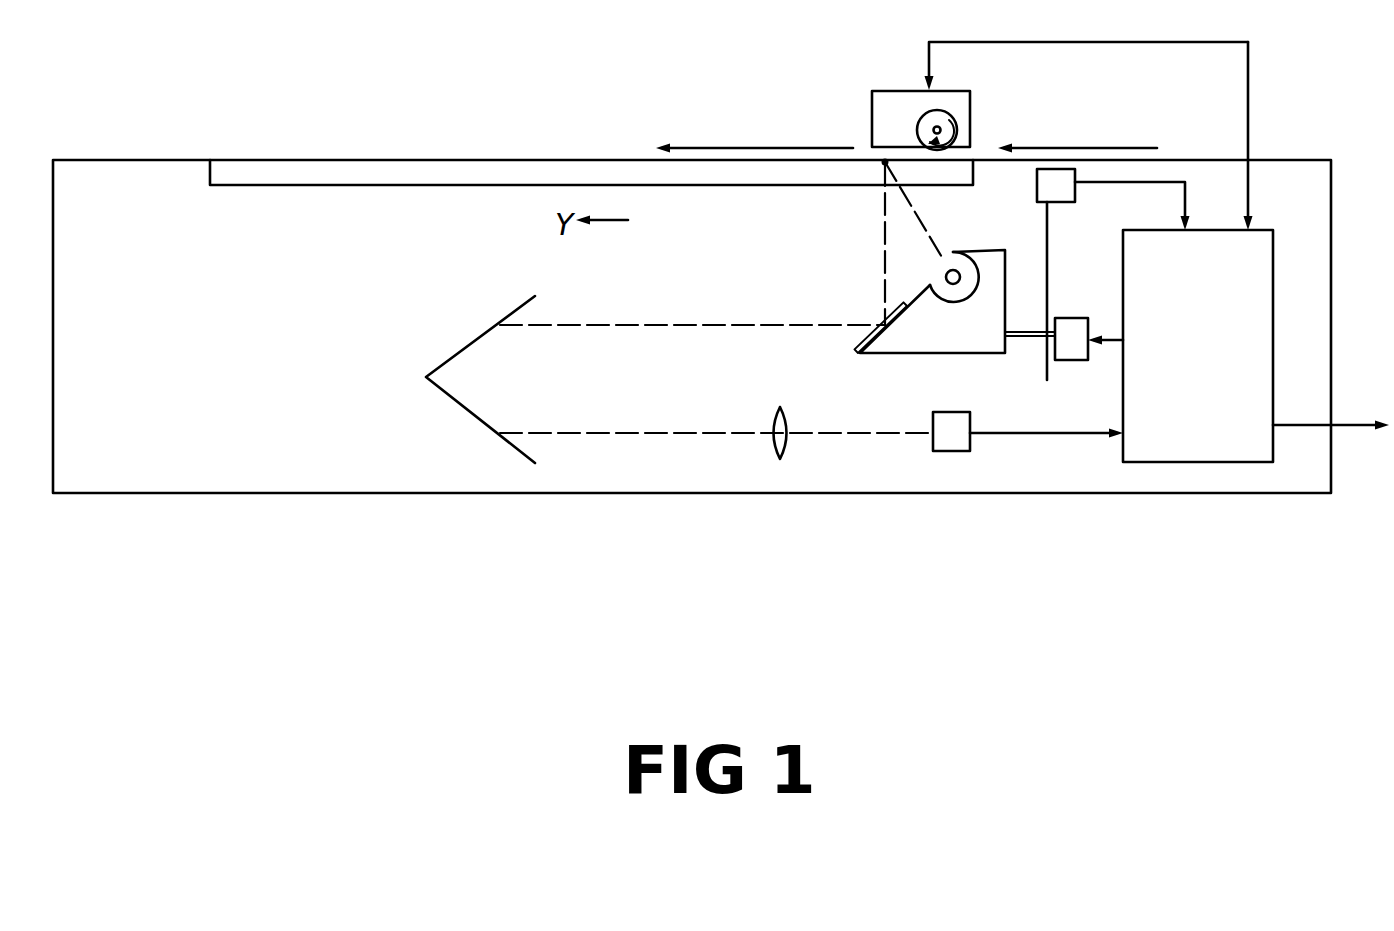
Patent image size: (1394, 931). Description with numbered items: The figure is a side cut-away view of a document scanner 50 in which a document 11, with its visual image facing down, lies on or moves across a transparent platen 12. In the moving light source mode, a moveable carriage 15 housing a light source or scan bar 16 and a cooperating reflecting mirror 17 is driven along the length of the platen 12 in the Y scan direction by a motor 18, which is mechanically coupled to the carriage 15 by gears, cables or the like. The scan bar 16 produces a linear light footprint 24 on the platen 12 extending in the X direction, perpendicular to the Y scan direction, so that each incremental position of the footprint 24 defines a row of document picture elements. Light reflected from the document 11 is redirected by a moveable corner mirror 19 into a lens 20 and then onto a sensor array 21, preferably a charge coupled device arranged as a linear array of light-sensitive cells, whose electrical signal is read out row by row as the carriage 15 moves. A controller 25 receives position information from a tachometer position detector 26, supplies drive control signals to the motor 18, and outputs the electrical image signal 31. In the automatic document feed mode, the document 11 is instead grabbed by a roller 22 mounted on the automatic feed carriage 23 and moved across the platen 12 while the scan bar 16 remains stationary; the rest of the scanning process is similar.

The document 11 is at (710, 148).
The transparent platen 12 is at (273, 188).
The moveable carriage 15 is at (1007, 353).
The light source (scan bar) 16 is at (944, 260).
The reflecting mirror 17 is at (862, 342).
The motor 18 is at (1070, 360).
The moveable corner mirror 19 is at (500, 433).
The lens 20 is at (772, 450).
The sensor array 21 is at (947, 452).
The roller 22 is at (950, 112).
The automatic feed carriage 23 is at (893, 90).
The light footprint 24 is at (883, 168).
The controller 25 is at (1216, 366).
The tachometer position detector 26 is at (1075, 192).
The electrical image signal 31 is at (1352, 428).
The document scanner 50 is at (325, 563).